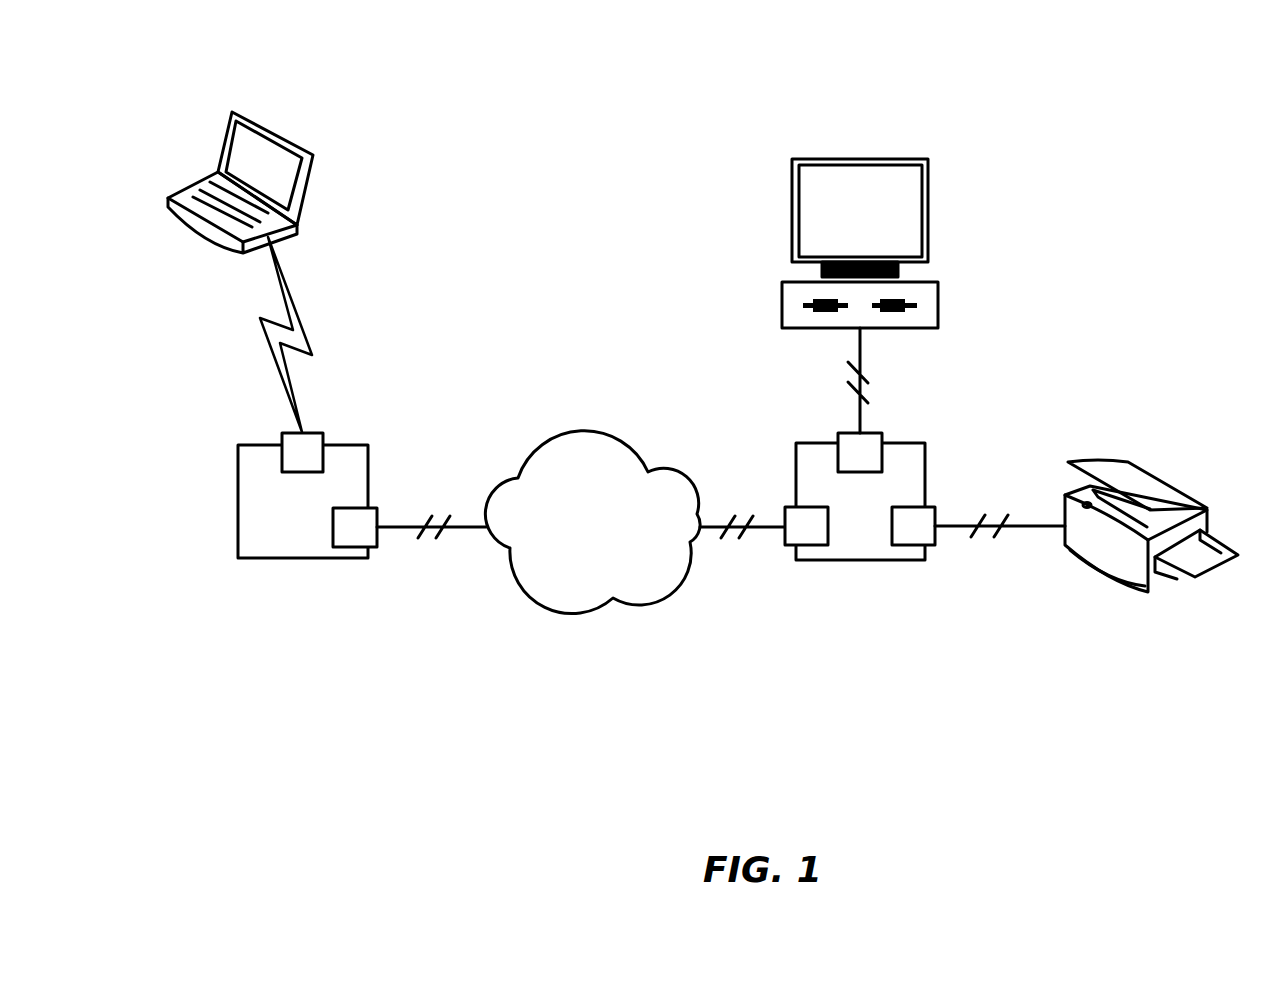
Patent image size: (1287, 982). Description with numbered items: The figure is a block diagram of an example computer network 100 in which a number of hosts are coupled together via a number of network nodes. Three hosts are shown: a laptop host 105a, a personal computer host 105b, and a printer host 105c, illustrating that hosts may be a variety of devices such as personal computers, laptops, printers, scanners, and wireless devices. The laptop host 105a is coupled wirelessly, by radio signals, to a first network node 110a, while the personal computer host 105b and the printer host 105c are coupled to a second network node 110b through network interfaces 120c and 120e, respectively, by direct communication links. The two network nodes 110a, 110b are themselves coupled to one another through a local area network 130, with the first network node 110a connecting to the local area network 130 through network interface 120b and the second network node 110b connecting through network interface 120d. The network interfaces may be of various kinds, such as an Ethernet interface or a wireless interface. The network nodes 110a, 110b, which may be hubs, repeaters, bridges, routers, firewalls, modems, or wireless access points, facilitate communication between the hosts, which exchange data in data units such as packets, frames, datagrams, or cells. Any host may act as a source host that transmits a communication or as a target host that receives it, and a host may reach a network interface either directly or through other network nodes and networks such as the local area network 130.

The computer network 100 is at (961, 78).
The host 105a is at (295, 144).
The host 105b is at (940, 307).
The host 105c is at (1170, 480).
The network node 110a is at (237, 506).
The network node 110b is at (907, 442).
The network interface 120b is at (375, 508).
The network interface 120c is at (837, 433).
The network interface 120d is at (785, 505).
The network interface 120e is at (933, 503).
The local area network 130 is at (588, 440).